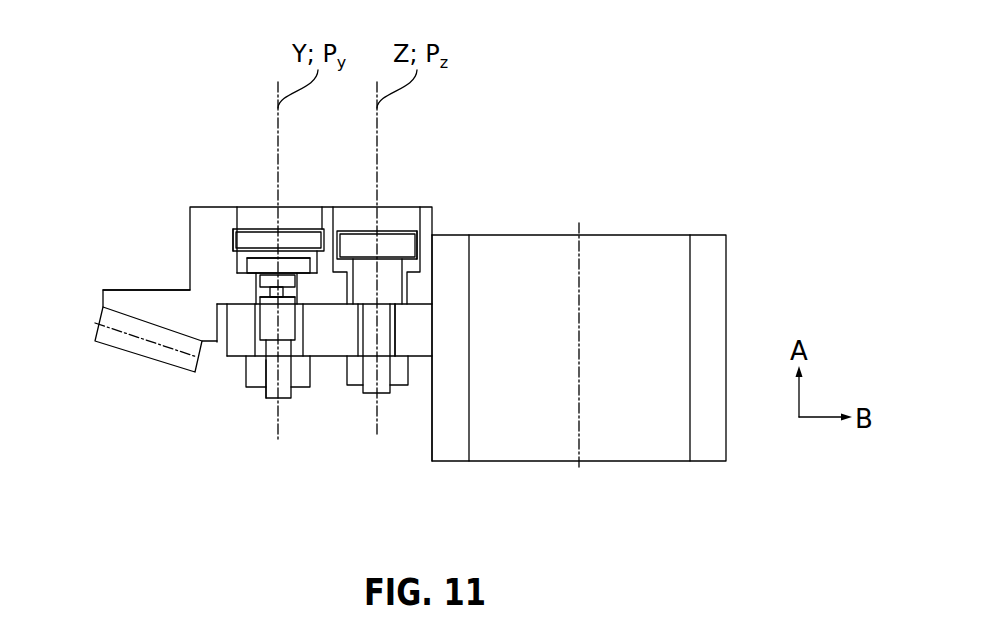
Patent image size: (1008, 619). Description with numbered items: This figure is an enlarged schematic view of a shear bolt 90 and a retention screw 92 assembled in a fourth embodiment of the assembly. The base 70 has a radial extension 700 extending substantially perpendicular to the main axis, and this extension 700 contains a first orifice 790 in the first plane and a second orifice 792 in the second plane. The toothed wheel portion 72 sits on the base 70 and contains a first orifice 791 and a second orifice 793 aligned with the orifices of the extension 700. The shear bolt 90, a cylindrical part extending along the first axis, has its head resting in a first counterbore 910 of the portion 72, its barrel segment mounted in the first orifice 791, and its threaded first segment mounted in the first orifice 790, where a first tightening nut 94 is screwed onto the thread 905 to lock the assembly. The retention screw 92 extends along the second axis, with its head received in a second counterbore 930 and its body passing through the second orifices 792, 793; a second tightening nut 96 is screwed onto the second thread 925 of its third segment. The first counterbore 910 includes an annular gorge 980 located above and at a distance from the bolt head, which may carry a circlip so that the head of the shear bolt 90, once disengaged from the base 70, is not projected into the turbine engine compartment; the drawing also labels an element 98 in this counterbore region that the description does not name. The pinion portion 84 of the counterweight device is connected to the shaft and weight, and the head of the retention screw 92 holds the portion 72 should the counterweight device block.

The base 70 is at (728, 286).
The toothed wheel portion 72 is at (145, 297).
The pinion portion 84 is at (127, 355).
The shear bolt 90 is at (254, 264).
The retention screw 92 is at (402, 218).
The first tightening nut 94 is at (253, 380).
The second tightening nut 96 is at (353, 373).
The nut 98 is at (308, 218).
The extension 700 is at (413, 324).
The first orifice 790 is at (255, 322).
The first orifice 791 is at (260, 291).
The second orifice 792 is at (398, 347).
The second orifice 793 is at (403, 286).
The thread 905 is at (266, 378).
The first counterbore 910 is at (243, 261).
The second thread 925 is at (370, 375).
The second counterbore 930 is at (417, 246).
The annular gorge 980 is at (235, 228).